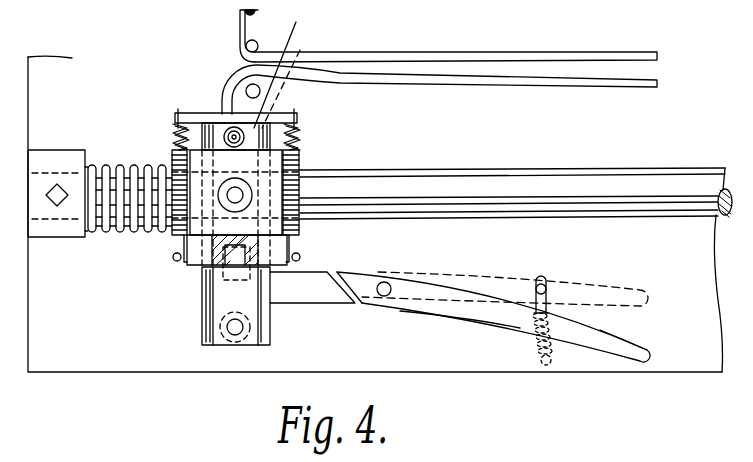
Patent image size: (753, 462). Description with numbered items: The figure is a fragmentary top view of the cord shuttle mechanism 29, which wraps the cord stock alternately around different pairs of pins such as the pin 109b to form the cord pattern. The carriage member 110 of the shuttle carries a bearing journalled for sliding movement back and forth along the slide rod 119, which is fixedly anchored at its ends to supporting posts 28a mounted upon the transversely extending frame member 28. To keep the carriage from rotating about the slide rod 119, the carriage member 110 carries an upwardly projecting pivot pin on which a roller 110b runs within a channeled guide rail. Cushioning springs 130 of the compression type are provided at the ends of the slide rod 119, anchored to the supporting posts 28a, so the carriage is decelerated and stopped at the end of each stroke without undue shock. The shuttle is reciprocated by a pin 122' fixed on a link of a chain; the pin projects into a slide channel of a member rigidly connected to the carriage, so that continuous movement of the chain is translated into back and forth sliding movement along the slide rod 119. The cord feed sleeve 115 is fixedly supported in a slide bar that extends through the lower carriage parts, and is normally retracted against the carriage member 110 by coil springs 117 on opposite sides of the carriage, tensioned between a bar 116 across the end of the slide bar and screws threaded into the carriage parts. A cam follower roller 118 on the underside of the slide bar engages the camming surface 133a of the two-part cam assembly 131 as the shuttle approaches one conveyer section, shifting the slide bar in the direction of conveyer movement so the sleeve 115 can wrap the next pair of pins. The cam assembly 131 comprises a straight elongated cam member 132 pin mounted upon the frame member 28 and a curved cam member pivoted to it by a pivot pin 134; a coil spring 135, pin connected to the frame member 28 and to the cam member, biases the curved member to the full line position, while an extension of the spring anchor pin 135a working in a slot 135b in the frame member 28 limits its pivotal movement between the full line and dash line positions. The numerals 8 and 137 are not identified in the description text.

The rake bar 8 is at (488, 57).
The frame member 28 is at (606, 353).
The supporting post 28a is at (61, 238).
The shuttle mechanism 29 is at (178, 323).
The pin 109b is at (258, 44).
The carriage member 110 is at (279, 183).
The roller 110b is at (248, 199).
The cord feed sleeve 115 is at (245, 132).
The bar 116 is at (204, 114).
The coil spring 117 is at (176, 145).
The roller 118 is at (227, 343).
The slide rod 119 is at (517, 154).
The pin 122' is at (194, 280).
The cushioning spring 130 is at (125, 228).
The cam assembly 131 is at (380, 271).
The cam member 132 is at (363, 302).
The camming surface 133a is at (592, 326).
The pivot pin 134 is at (385, 297).
The coil spring 135 is at (533, 360).
The spring anchor pin 135a is at (531, 325).
The slot 135b is at (547, 293).
The lever edge 137 is at (442, 312).